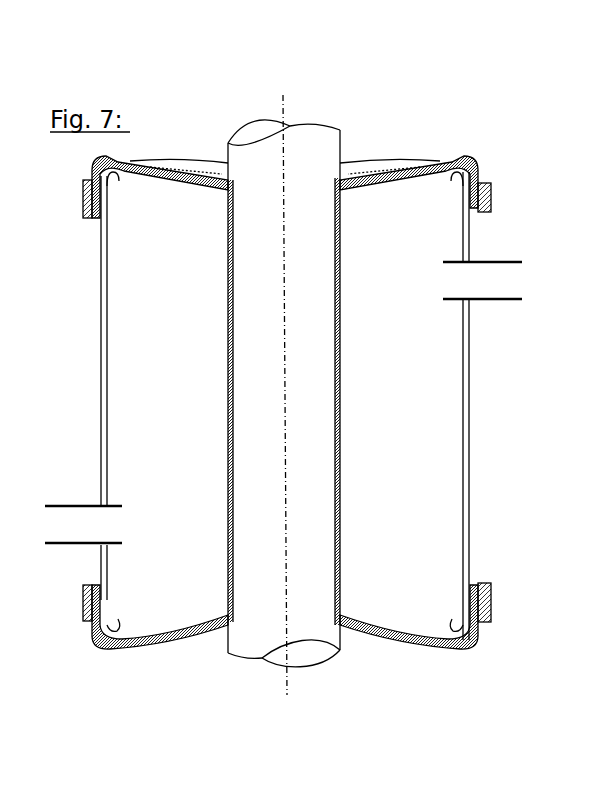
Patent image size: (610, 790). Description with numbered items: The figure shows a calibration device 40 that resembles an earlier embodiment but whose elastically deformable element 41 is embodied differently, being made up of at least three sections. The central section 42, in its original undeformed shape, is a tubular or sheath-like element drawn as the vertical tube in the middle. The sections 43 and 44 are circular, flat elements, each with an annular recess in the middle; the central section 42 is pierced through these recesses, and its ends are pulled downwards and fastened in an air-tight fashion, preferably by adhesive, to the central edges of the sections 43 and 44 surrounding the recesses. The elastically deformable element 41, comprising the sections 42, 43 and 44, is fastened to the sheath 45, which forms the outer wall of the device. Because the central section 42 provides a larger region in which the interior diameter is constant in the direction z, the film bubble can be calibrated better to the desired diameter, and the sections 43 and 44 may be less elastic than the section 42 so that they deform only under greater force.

The calibration device 40 is at (392, 134).
The elastically deformable element 41 is at (375, 188).
The central section 42 is at (341, 423).
The section 43 is at (422, 180).
The section 44 is at (396, 614).
The sheath 45 is at (469, 443).